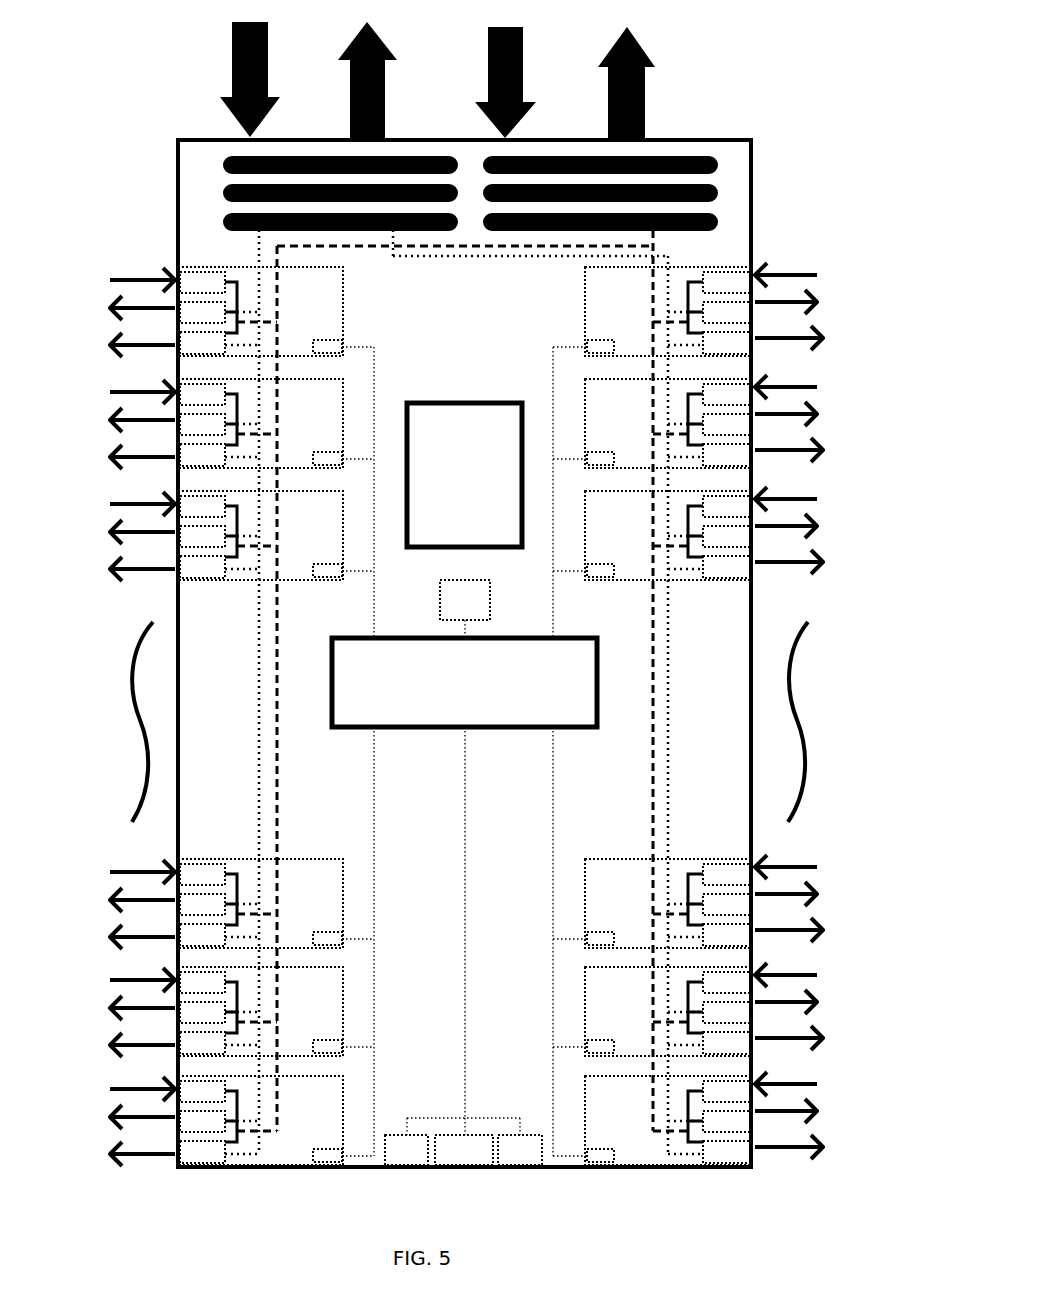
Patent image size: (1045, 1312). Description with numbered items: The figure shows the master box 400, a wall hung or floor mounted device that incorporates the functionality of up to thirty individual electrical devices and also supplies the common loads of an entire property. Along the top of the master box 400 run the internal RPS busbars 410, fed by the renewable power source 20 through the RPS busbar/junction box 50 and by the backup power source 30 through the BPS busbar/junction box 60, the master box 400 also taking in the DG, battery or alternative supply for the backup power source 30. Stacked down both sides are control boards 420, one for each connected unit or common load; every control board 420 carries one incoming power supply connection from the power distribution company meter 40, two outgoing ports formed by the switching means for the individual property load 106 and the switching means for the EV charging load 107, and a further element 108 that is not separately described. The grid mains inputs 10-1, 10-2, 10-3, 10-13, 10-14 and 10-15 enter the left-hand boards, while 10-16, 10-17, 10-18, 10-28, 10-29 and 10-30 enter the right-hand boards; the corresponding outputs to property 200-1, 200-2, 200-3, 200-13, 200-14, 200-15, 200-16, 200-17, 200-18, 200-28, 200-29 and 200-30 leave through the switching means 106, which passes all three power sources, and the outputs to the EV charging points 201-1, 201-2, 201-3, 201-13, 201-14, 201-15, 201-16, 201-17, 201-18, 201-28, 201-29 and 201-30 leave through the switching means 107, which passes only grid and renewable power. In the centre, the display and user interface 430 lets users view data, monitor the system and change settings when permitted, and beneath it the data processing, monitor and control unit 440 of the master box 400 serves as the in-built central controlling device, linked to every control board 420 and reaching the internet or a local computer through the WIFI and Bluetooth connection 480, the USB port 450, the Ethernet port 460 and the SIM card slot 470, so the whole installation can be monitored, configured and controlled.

The master box 400 is at (773, 222).
The internal RPS busbar of the master box 410 is at (470, 193).
The control board 420 is at (464, 716).
The display and user interface 430 is at (464, 475).
The data processing, monitor and control unit of the master box 440 is at (464, 682).
The USB port 450 is at (406, 1150).
The Ethernet port 460 is at (464, 1150).
The SIM card slot 470 is at (520, 1150).
The WIFI and Bluetooth connection 480 is at (465, 600).
The individual unit power supply 40 is at (465, 687).
The switching means for individual property load 106 is at (465, 717).
The switching means for EV charging load 107 is at (465, 747).
The module controller 108 is at (463, 751).
The renewable power source 20 is at (265, 79).
The backup power source 30 is at (524, 82).
The RPS busbar/junction box 50 is at (387, 80).
The BPS busbar/junction box 60 is at (646, 82).
The grid mains input of unit one 10-1 is at (113, 280).
The output to property of unit one 200-1 is at (109, 308).
The output to EV charging point of unit one 201-1 is at (109, 345).
The grid mains input of unit two 10-2 is at (113, 392).
The output to property of unit two 200-2 is at (109, 420).
The output to EV charging point of unit two 201-2 is at (109, 457).
The grid mains input of unit three 10-3 is at (113, 504).
The output to property of unit three 200-3 is at (109, 532).
The output to EV charging point of unit three 201-3 is at (109, 569).
The grid mains input of unit thirteen 10-13 is at (109, 872).
The output to property of unit thirteen 200-13 is at (105, 900).
The output to EV charging point of unit thirteen 201-13 is at (105, 937).
The grid mains input of unit fourteen 10-14 is at (109, 980).
The output to property of unit fourteen 200-14 is at (105, 1008).
The output to EV charging point of unit fourteen 201-14 is at (105, 1045).
The grid mains input of unit fifteen 10-15 is at (109, 1089).
The output to property of unit fifteen 200-15 is at (105, 1117).
The output to EV charging point of unit fifteen 201-15 is at (105, 1154).
The grid mains input of unit sixteen 10-16 is at (821, 275).
The output to property of unit sixteen 200-16 is at (828, 302).
The output to EV charging point of unit sixteen 201-16 is at (828, 338).
The grid mains input of unit seventeen 10-17 is at (821, 387).
The output to property of unit seventeen 200-17 is at (828, 414).
The output to EV charging point of unit seventeen 201-17 is at (828, 450).
The grid mains input of unit eighteen 10-18 is at (821, 499).
The output to property of unit eighteen 200-18 is at (828, 526).
The output to EV charging point of unit eighteen 201-18 is at (828, 562).
The grid mains input of unit twenty-eight 10-28 is at (821, 867).
The output to property of unit twenty-eight 200-28 is at (828, 894).
The output to EV charging point of unit twenty-eight 201-28 is at (828, 930).
The grid mains input of unit twenty-nine 10-29 is at (821, 975).
The output to property of unit twenty-nine 200-29 is at (828, 1002).
The output to EV charging point of unit twenty-nine 201-29 is at (828, 1038).
The grid mains input of unit thirty 10-30 is at (821, 1084).
The output to property of unit thirty 200-30 is at (828, 1111).
The output to EV charging point of unit thirty 201-30 is at (828, 1147).